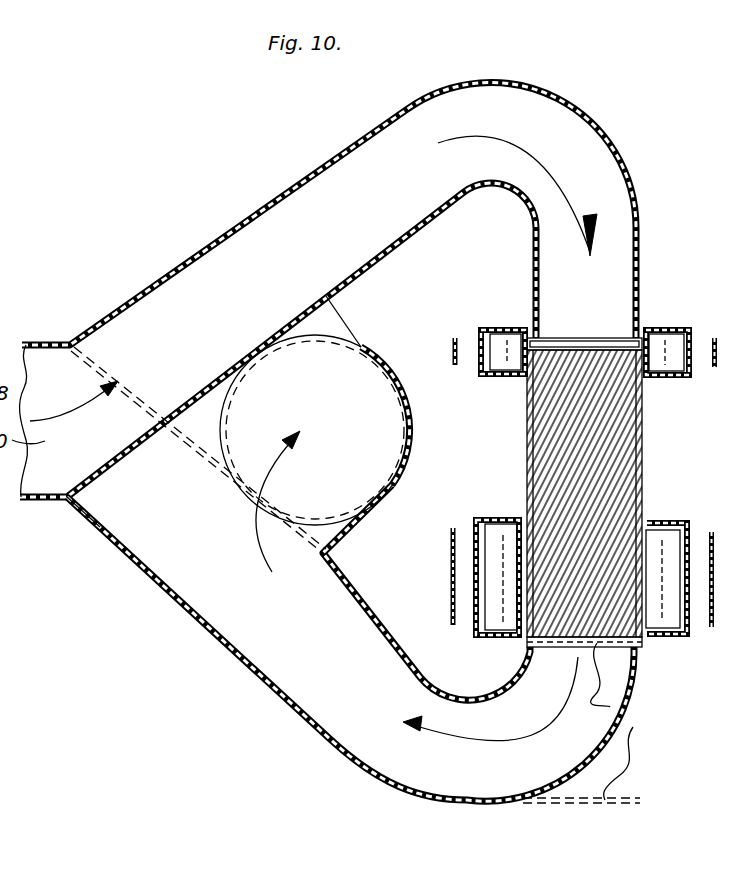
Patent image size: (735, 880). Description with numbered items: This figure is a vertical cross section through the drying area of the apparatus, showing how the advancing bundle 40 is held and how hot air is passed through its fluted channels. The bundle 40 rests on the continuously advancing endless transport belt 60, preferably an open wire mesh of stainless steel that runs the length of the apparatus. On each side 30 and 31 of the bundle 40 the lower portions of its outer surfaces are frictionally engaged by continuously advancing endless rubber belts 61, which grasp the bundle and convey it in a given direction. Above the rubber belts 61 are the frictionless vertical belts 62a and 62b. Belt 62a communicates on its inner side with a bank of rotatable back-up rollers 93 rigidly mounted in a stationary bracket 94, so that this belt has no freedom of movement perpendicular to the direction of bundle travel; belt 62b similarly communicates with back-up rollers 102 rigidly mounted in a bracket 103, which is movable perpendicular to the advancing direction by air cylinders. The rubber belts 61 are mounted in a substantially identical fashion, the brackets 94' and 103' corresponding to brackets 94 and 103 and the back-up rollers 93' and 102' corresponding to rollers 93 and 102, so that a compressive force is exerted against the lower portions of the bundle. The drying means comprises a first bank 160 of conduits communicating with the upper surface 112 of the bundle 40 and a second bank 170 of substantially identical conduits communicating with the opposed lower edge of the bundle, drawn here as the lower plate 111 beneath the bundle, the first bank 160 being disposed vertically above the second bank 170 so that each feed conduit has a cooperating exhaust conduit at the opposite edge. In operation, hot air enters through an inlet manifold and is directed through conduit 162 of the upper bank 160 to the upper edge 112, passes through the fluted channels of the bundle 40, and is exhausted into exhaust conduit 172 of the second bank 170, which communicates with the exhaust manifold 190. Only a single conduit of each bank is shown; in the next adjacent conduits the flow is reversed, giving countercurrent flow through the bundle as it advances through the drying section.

The first bank of conduits 160 is at (298, 160).
The feed conduit 162 is at (265, 214).
The exhaust conduit 172 is at (290, 686).
The second bank of conduits 170 is at (312, 742).
The endless transport belt 60 is at (632, 716).
The exhaust manifold 190 is at (395, 481).
The side of bundle 30 is at (530, 452).
The bundle 40 is at (523, 433).
The side of bundle 31 is at (643, 458).
The upper surface of bundle 112 is at (572, 349).
The lower end plate 111 is at (588, 647).
The bracket 103 is at (461, 345).
The back-up rollers 102 is at (479, 368).
The second frictionless belt 62b is at (455, 337).
The back-up rollers 93 is at (681, 376).
The stationary bracket 94 is at (666, 386).
The frictionless vertical belt 62a is at (716, 336).
The bracket 103' is at (458, 565).
The back-up rollers 102' is at (453, 577).
The rubber belt 61 is at (520, 541).
The back-up rollers 93' is at (359, 596).
The bracket 94' is at (663, 555).